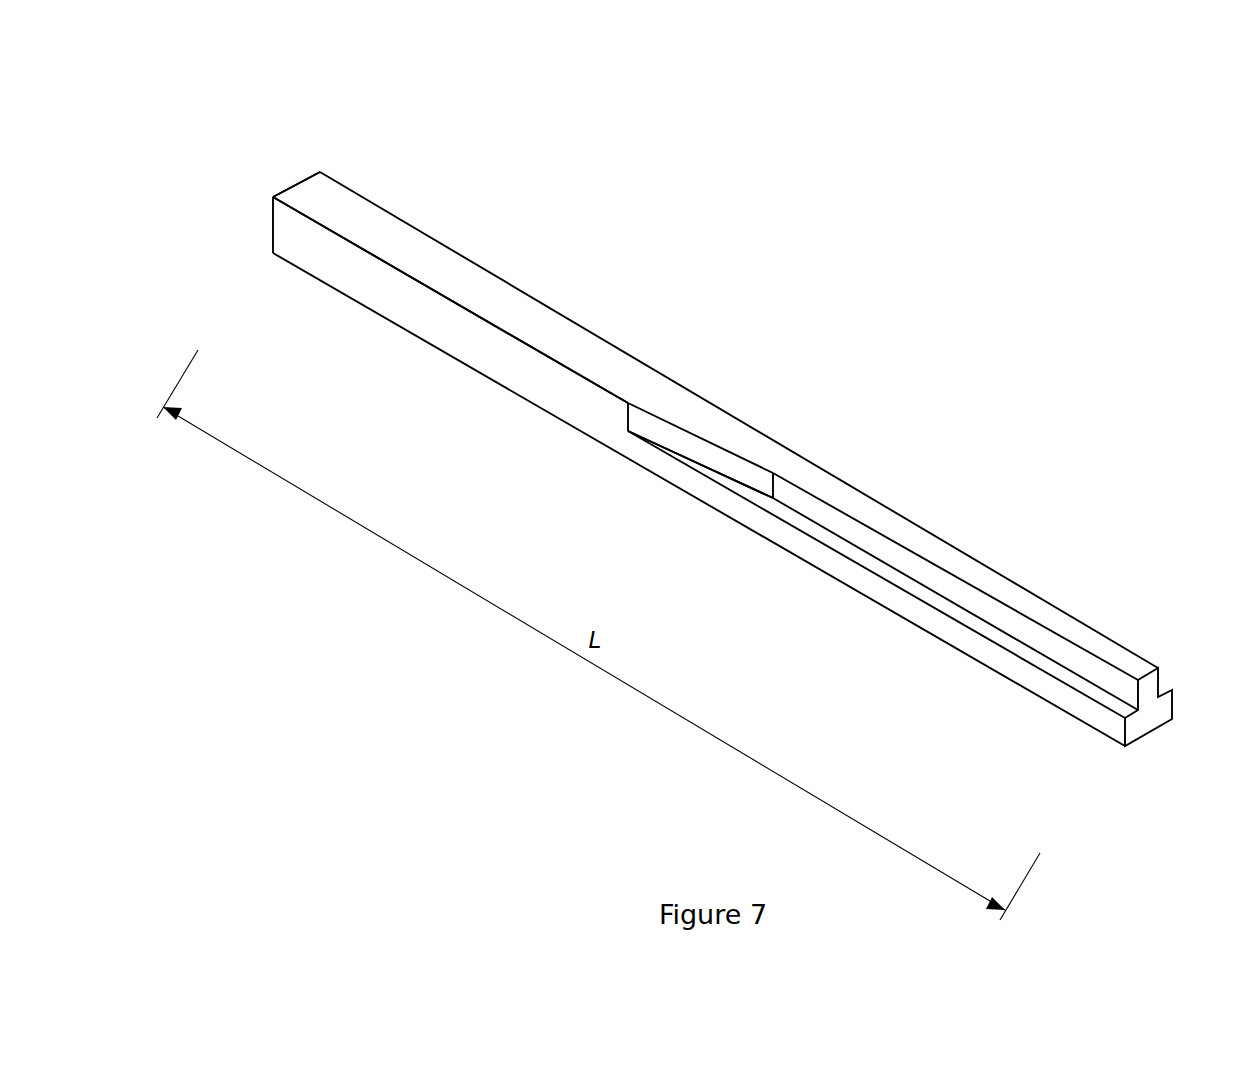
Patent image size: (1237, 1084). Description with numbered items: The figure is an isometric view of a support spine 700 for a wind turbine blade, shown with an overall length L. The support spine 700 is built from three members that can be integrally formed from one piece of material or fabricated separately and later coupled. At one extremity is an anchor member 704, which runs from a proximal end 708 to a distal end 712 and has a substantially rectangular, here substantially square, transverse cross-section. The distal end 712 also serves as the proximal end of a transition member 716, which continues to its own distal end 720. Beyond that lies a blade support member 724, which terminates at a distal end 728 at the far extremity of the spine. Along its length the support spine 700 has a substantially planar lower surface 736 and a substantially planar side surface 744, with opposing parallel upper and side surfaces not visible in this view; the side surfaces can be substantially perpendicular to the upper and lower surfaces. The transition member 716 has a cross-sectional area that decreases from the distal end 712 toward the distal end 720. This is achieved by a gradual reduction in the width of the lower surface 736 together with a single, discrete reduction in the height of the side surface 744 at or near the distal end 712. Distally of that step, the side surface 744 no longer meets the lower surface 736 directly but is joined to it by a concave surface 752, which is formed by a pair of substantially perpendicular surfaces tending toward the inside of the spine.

The support spine 700 is at (1100, 140).
The anchor member 704 is at (448, 226).
The proximal end 708 is at (285, 190).
The distal end 712 is at (612, 452).
The transition member 716 is at (745, 385).
The distal end 720 is at (767, 543).
The blade support member 724 is at (988, 534).
The distal end 728 is at (1152, 706).
The lower surface 736 is at (1015, 597).
The side surface 744 is at (497, 343).
The concave surface 752 is at (717, 463).